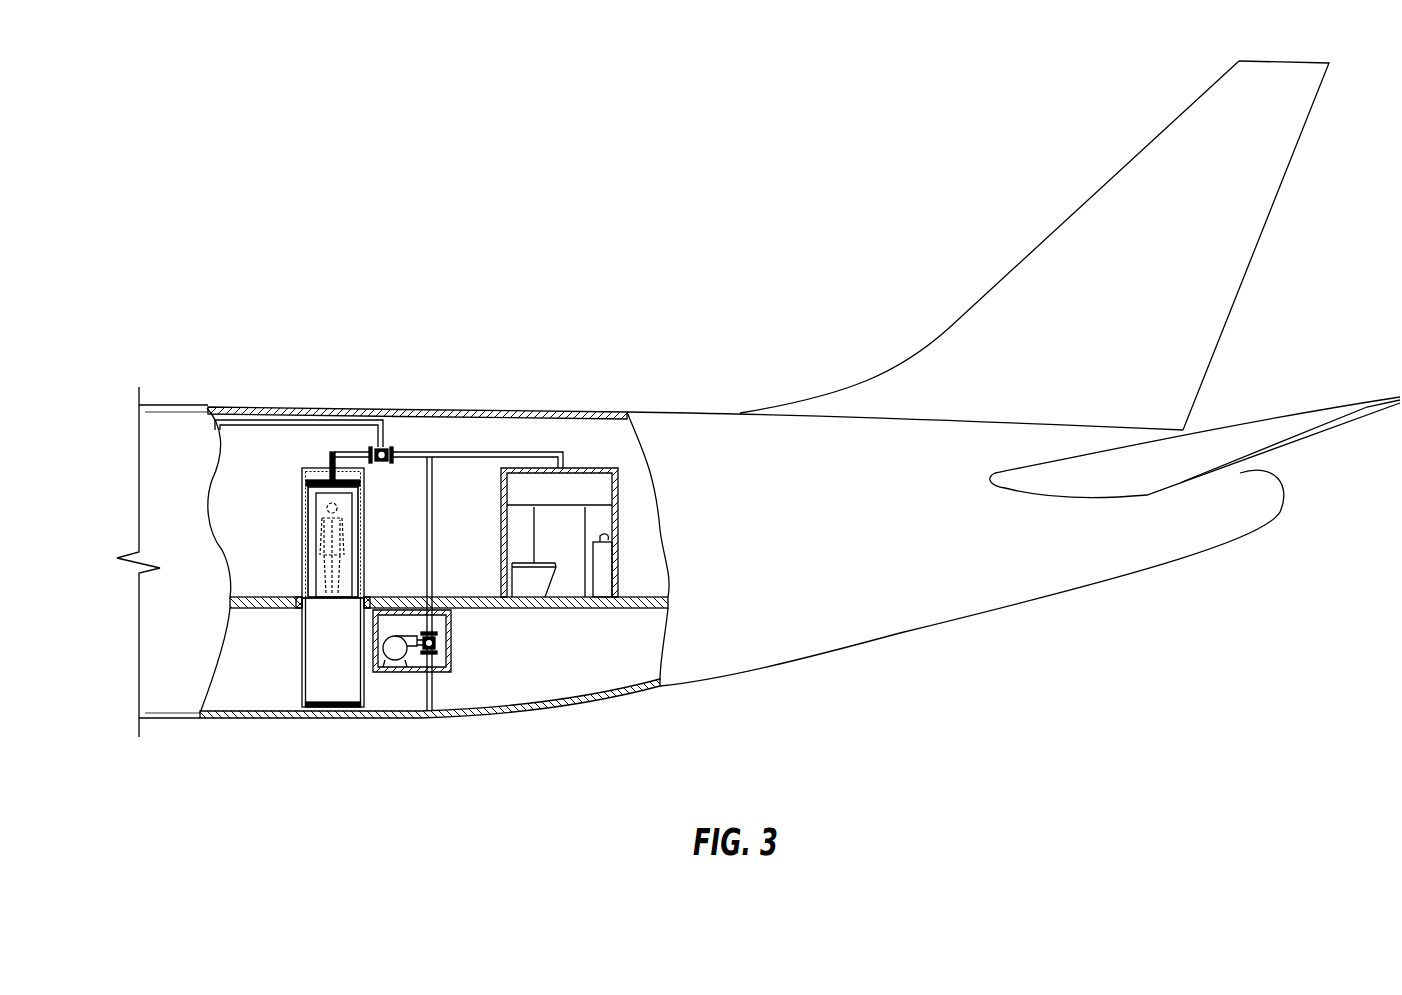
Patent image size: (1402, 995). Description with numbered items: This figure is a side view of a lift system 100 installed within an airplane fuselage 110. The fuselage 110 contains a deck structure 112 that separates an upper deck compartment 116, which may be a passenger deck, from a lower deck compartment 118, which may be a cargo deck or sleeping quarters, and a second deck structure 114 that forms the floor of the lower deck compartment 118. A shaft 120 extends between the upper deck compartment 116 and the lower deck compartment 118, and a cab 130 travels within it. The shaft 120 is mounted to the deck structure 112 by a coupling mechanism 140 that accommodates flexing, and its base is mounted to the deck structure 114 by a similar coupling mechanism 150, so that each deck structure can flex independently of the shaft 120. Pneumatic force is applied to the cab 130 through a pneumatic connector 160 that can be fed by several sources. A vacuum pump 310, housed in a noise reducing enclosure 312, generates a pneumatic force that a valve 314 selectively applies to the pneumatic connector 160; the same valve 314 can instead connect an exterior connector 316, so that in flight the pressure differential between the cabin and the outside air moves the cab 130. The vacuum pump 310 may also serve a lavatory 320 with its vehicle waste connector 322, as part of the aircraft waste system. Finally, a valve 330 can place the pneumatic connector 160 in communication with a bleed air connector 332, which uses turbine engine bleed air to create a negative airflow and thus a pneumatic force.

The lift system 100 is at (174, 184).
The fuselage 110 is at (410, 407).
The deck structure 112 is at (478, 597).
The deck structure 114 is at (604, 686).
The upper deck compartment 116 is at (244, 482).
The lower deck compartment 118 is at (242, 629).
The shaft 120 is at (302, 677).
The cab 130 is at (306, 528).
The coupling mechanism 140 is at (302, 597).
The coupling mechanism 150 is at (296, 707).
The pneumatic connector 160 is at (330, 463).
The vacuum pump 310 is at (397, 655).
The noise reducing enclosure 312 is at (452, 662).
The valve 314 is at (440, 642).
The exterior connector 316 is at (434, 702).
The lavatory 320 is at (590, 468).
The vehicle waste connector 322 is at (503, 452).
The valve 330 is at (384, 463).
The bleed air connector 332 is at (274, 418).